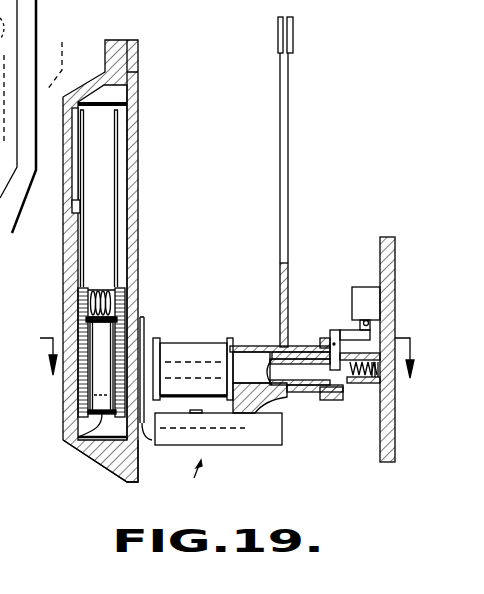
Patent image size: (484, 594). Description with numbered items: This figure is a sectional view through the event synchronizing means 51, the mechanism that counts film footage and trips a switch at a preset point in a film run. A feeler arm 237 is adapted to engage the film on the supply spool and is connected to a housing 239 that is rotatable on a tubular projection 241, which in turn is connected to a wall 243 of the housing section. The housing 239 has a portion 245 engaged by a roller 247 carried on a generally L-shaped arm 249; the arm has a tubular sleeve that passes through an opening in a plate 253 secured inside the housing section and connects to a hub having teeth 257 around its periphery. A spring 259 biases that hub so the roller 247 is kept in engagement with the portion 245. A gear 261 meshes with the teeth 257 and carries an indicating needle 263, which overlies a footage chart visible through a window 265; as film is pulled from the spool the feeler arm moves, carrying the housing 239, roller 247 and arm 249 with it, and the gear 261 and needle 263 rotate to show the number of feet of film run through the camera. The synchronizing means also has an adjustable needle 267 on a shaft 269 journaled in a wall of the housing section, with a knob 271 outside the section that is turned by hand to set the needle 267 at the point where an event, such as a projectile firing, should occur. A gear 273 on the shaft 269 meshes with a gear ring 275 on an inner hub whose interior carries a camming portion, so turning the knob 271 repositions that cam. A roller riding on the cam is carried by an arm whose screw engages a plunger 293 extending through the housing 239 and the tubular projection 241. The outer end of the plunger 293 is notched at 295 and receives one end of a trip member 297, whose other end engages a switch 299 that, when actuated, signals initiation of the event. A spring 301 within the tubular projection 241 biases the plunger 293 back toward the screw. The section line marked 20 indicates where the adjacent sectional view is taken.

The section line 20 is at (228, 370).
The event synchronizing means 51 is at (183, 478).
The feeler arm 237 is at (8, 53).
The housing 239 is at (268, 347).
The tubular projection 241 is at (297, 351).
The wall 243 is at (380, 242).
The portion 245 is at (217, 402).
The roller 247 is at (232, 431).
The L-shaped arm 249 is at (152, 440).
The plate 253 is at (101, 261).
The teeth 257 is at (145, 323).
The spring 259 is at (78, 437).
The gear 261 is at (123, 290).
The indicating needle 263 is at (118, 148).
The window 265 is at (83, 182).
The adjustable needle 267 is at (74, 203).
The shaft 269 is at (66, 341).
The knob 271 is at (63, 402).
The gear 273 is at (78, 290).
The gear ring 275 is at (83, 398).
The plunger 293 is at (291, 400).
The notch 295 is at (283, 365).
The trip member 297 is at (340, 330).
The switch 299 is at (365, 287).
The spring 301 is at (363, 377).